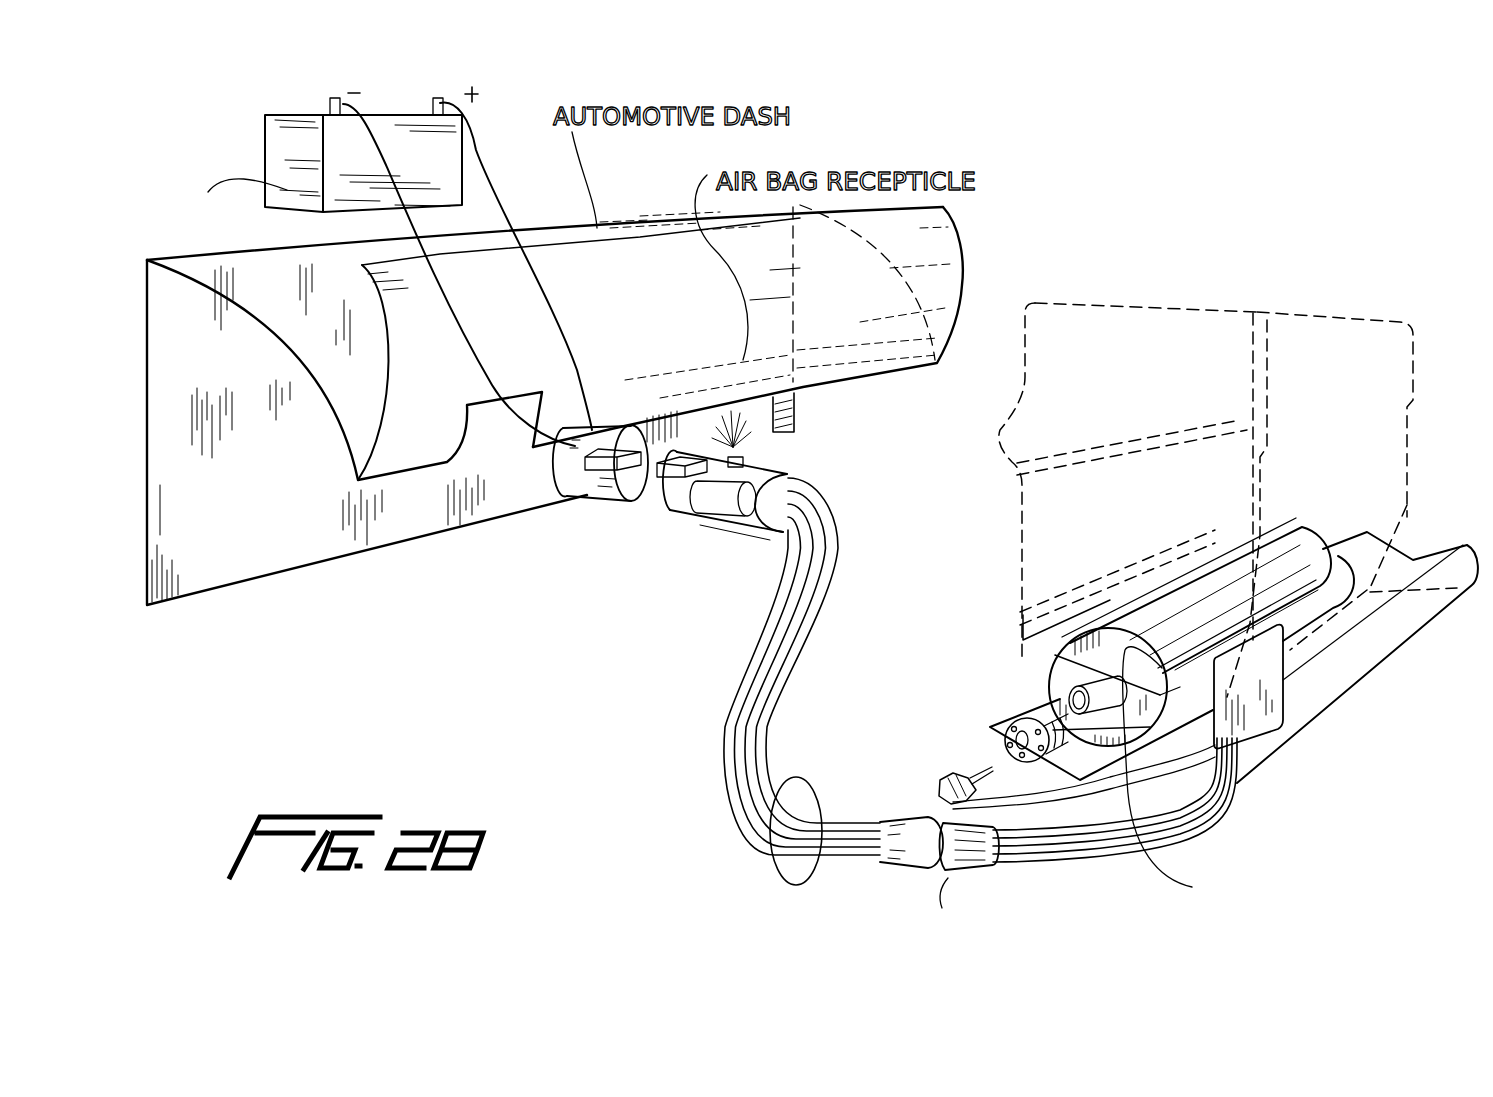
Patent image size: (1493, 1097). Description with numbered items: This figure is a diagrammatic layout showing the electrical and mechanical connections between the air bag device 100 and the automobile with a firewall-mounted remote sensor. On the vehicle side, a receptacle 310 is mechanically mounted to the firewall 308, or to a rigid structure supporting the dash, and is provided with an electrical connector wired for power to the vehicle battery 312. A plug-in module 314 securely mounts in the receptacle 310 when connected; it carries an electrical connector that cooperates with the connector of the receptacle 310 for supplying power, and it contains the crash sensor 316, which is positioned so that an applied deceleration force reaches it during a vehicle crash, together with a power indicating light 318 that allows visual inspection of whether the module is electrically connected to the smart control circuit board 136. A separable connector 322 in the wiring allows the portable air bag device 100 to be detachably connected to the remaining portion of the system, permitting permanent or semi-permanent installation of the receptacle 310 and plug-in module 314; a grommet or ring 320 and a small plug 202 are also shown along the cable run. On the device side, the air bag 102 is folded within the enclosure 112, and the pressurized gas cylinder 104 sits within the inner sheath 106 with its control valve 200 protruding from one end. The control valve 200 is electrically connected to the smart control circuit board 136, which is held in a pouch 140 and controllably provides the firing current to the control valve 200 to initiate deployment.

The air bag device 100 is at (1198, 245).
The air bag 102 is at (1137, 293).
The pressurized gas cylinder 104 is at (1160, 625).
The inner sheath 106 is at (1183, 627).
The enclosure 112 is at (1420, 417).
The smart control circuit board 136 is at (1287, 692).
The pouch 140 is at (1273, 737).
The control valve 200 is at (1002, 720).
The shorting plug 202 is at (937, 780).
The firewall 308 is at (287, 570).
The receptacle 310 is at (585, 438).
The vehicle battery 312 is at (265, 128).
The plug-in module 314 is at (673, 513).
The crash sensor 316 is at (718, 527).
The power indicating light 318 is at (755, 435).
The cable grommet 320 is at (775, 860).
The separable connector 322 is at (977, 880).